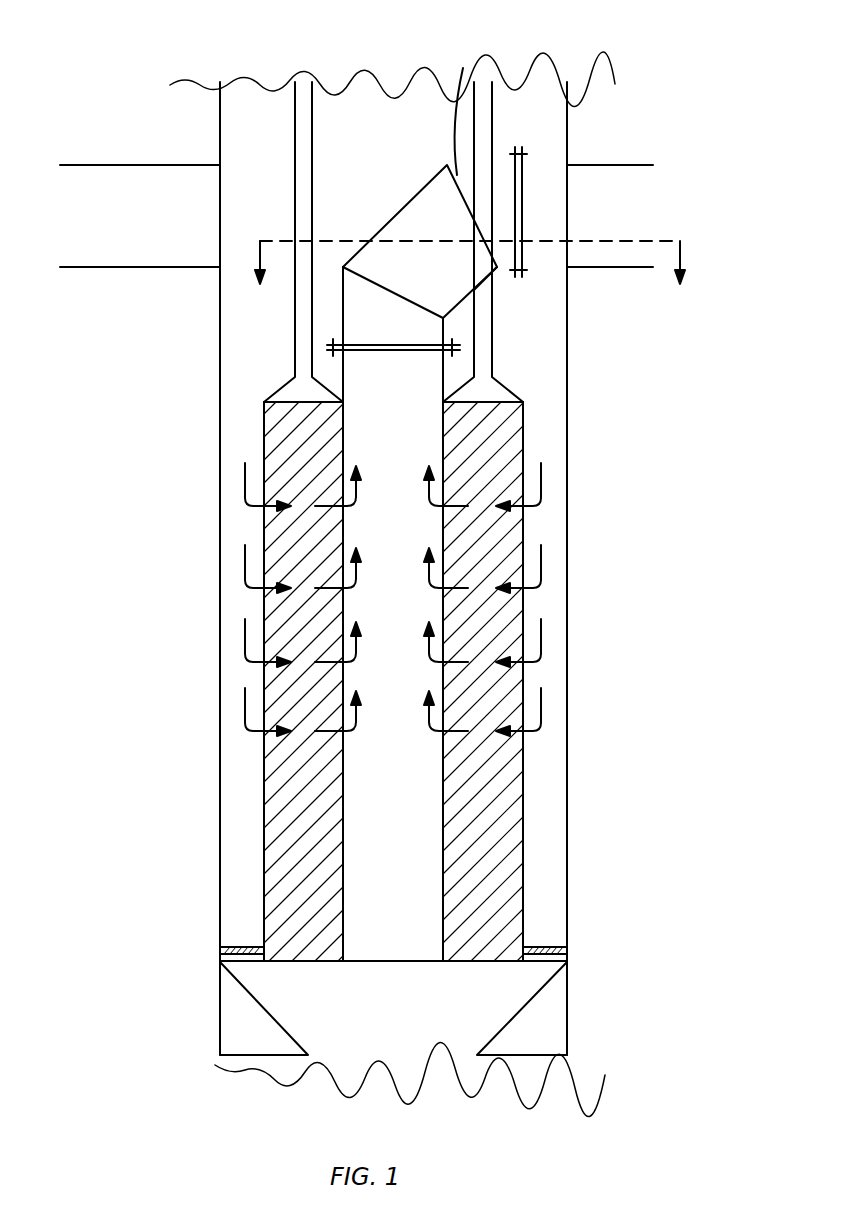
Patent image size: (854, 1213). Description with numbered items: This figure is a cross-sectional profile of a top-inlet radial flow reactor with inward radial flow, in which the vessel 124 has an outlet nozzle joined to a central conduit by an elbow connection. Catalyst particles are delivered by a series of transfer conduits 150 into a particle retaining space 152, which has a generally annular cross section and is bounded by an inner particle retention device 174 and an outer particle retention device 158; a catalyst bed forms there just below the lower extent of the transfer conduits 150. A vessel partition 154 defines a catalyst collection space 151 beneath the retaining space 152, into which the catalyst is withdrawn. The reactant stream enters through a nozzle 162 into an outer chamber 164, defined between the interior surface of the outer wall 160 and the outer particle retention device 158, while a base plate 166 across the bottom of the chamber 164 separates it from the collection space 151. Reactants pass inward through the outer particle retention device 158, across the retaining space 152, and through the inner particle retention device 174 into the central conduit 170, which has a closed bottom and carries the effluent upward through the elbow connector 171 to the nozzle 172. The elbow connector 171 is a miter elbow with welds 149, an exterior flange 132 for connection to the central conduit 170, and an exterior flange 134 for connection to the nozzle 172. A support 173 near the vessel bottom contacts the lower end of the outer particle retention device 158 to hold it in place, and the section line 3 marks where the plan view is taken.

The vessel 124 is at (698, 542).
The exterior flange 132 is at (368, 343).
The exterior flange 134 is at (523, 228).
The weld 149 is at (461, 108).
The transfer conduits 150 is at (313, 127).
The catalyst collection space 151 is at (443, 1030).
The particle retaining space 152 is at (334, 415).
The vessel partition 154 is at (232, 1014).
The outer particle retention device 158 is at (265, 437).
The outer wall 160 is at (220, 662).
The nozzle 162 is at (97, 173).
The outer chamber 164 is at (230, 790).
The base plate 166 is at (394, 963).
The central conduit 170 is at (417, 778).
The elbow connector 171 is at (410, 212).
The nozzle 172 is at (623, 173).
The support 173 is at (238, 945).
The inner particle retention device 174 is at (443, 454).
The line 3- 3 is at (466, 288).